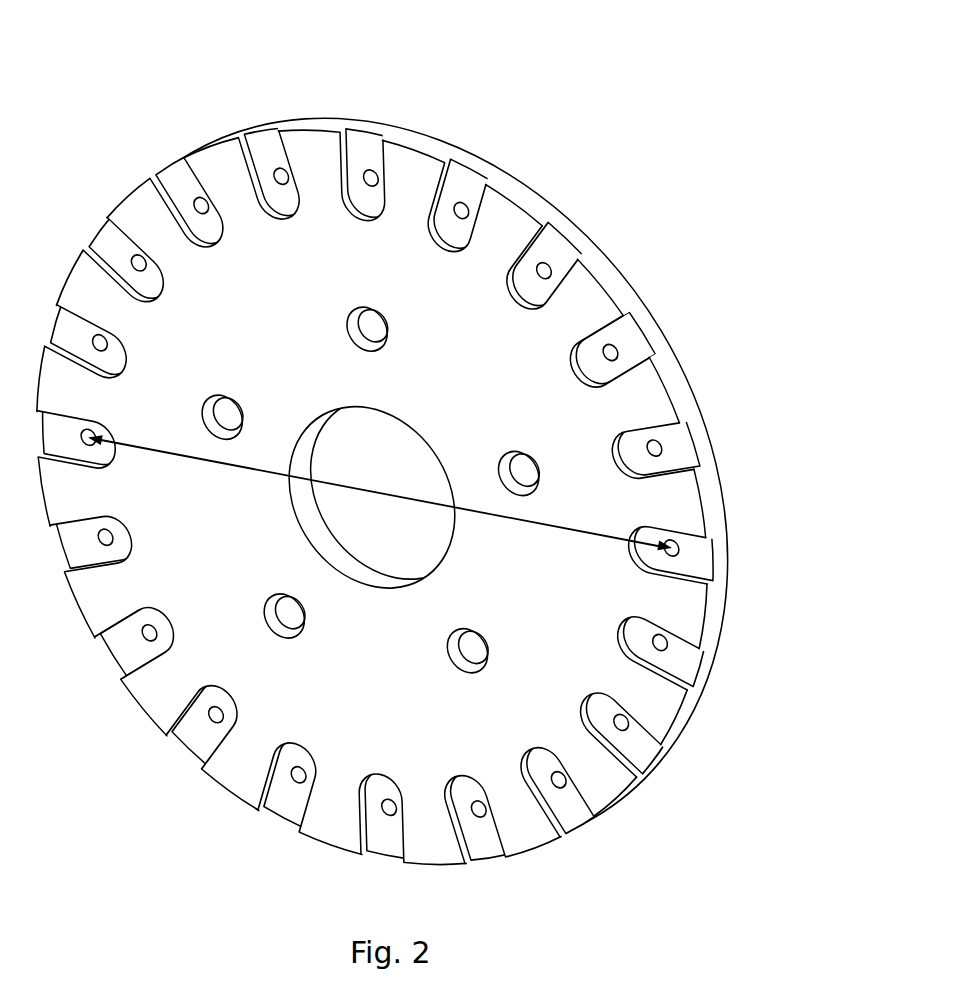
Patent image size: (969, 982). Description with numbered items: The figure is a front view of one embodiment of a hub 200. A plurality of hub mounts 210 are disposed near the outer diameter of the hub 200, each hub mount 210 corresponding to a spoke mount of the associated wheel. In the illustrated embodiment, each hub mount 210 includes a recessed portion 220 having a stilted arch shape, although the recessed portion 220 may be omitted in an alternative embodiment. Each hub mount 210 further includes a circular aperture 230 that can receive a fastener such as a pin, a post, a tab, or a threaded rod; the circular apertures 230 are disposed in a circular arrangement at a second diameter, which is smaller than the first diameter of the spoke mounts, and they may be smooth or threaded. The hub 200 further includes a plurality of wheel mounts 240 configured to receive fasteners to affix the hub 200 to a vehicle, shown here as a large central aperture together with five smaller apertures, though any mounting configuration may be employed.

The hub 200 is at (720, 110).
The hub mount 210 is at (367, 98).
The recessed portion 220 is at (570, 257).
The circular aperture 230 is at (463, 205).
The wheel mount 240 is at (538, 461).